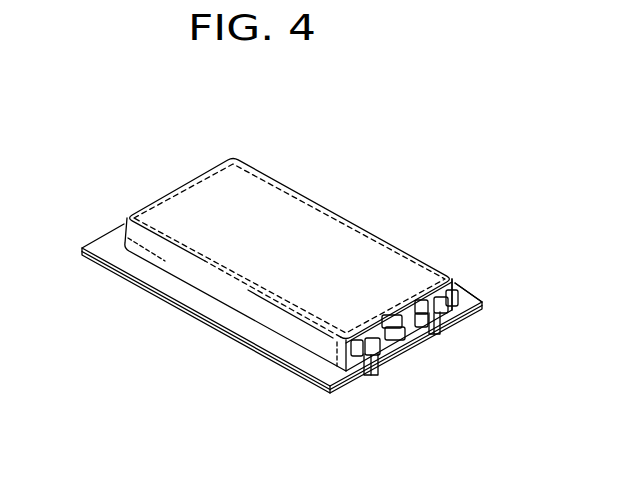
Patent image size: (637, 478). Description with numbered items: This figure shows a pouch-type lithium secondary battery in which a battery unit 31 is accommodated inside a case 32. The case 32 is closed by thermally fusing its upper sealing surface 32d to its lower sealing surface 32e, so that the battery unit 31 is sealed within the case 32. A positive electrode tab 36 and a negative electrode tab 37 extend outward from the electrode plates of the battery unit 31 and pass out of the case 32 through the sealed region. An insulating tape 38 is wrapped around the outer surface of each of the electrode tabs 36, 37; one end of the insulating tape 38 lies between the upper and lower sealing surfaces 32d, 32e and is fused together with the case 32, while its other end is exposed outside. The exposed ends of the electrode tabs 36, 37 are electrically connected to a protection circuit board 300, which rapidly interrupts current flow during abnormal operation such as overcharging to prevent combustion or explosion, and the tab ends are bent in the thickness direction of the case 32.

The protection circuit board 300 is at (347, 376).
The battery unit 31 is at (375, 252).
The case 32 is at (345, 216).
The upper sealing surface 32d is at (468, 314).
The lower sealing surface 32e is at (463, 303).
The positive electrode tab 36 is at (447, 323).
The negative electrode tab 37 is at (387, 353).
The insulating tape 38 is at (372, 373).